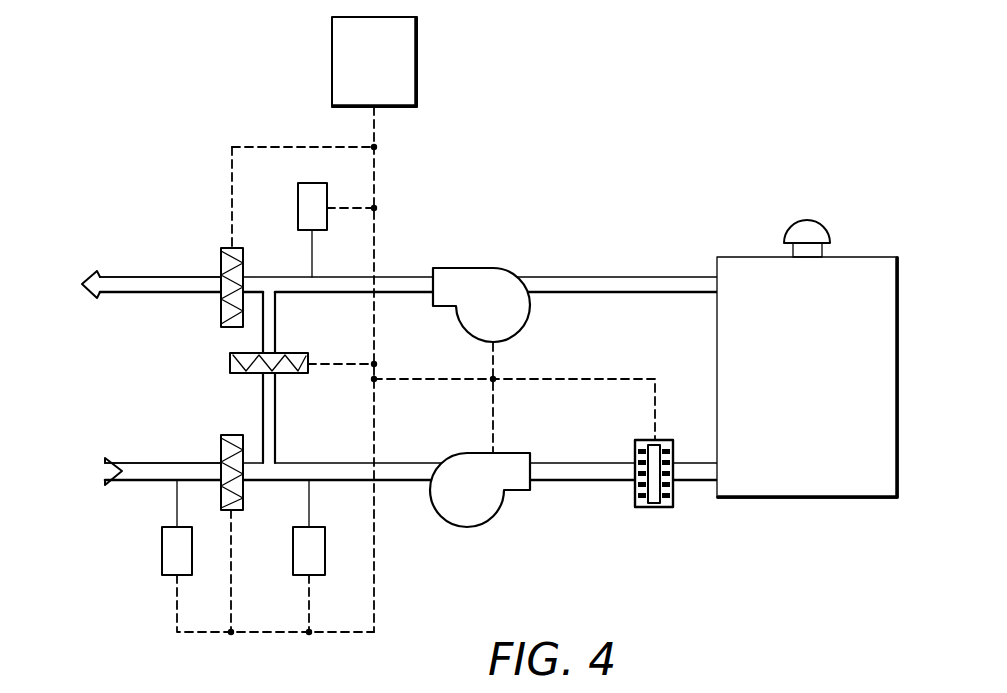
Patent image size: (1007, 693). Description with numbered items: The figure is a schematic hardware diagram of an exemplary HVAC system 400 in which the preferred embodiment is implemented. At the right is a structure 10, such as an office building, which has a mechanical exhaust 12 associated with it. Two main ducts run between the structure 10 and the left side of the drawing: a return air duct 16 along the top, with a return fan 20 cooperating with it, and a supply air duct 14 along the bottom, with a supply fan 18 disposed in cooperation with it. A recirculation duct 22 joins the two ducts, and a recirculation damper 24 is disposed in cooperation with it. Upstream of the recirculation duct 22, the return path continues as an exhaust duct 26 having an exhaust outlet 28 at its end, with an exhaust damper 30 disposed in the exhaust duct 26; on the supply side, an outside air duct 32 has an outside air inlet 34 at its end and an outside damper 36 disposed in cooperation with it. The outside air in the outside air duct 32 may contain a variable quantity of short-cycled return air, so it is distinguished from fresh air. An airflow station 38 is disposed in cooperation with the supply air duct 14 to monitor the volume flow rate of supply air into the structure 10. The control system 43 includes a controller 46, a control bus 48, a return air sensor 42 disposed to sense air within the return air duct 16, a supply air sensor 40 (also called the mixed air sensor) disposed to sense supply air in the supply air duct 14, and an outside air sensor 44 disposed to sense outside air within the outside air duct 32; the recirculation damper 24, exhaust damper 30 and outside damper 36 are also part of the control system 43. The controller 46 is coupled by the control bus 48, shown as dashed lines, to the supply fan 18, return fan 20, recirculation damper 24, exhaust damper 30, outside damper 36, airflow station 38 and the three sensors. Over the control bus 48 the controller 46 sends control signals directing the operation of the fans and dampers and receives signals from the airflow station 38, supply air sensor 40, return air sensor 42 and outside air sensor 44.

The structure 10 is at (865, 257).
The mechanical exhaust 12 is at (810, 223).
The supply air duct 14 is at (576, 519).
The return air duct 16 is at (617, 226).
The supply fan 18 is at (468, 527).
The return fan 20 is at (463, 268).
The recirculation duct 22 is at (263, 422).
The recirculation damper 24 is at (230, 364).
The exhaust duct 26 is at (118, 277).
The exhaust outlet 28 is at (84, 283).
The exhaust damper 30 is at (222, 252).
The outside air duct 32 is at (135, 463).
The outside air inlet 34 is at (106, 470).
The outside damper 36 is at (222, 441).
The airflow station 38 is at (666, 507).
The supply air sensor 40 is at (293, 556).
The return air sensor 42 is at (298, 209).
The control system 43 is at (310, 62).
The outside air sensor 44 is at (162, 556).
The controller 46 is at (417, 75).
The control bus 48 is at (410, 184).
The HVAC system 400 is at (158, 124).